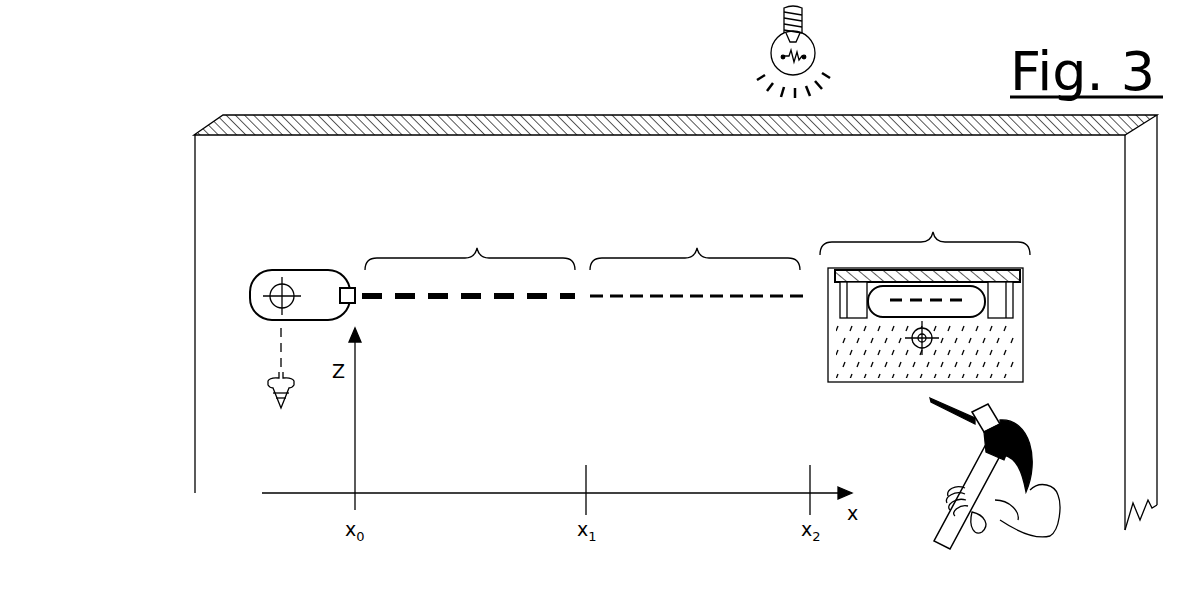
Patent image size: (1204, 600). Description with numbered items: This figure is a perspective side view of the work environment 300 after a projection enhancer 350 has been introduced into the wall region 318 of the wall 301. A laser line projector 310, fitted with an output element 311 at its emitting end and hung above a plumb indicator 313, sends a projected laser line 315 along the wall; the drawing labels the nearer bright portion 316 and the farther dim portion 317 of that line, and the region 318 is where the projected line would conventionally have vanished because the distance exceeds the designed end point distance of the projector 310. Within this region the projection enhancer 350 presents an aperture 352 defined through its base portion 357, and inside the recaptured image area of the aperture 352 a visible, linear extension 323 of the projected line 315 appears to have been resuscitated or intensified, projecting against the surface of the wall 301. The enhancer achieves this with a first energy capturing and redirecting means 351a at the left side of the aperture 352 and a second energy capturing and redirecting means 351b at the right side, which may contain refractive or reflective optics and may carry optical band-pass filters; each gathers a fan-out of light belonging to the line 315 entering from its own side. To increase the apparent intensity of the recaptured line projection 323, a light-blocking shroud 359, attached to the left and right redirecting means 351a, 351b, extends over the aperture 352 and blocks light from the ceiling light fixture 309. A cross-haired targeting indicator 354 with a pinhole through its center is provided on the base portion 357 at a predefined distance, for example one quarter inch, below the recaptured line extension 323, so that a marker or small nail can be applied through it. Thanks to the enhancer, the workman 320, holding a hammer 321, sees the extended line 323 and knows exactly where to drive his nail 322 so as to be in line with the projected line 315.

The work environment 300 is at (318, 82).
The wall 301 is at (487, 122).
The ceiling light fixture 309 is at (762, 70).
The projector 310 is at (305, 270).
The emitter aperture 311 is at (355, 280).
The plumb bob 313 is at (282, 413).
The projected laser line 315 is at (572, 305).
The bright portion of beam 316 is at (468, 245).
The dim portion of beam 317 is at (699, 245).
The wall region 318 is at (925, 217).
The workman 320 is at (1040, 535).
The hammer 321 is at (1030, 440).
The nail 322 is at (946, 417).
The recaptured line projection 323 is at (893, 302).
The projection enhancer 350 is at (826, 382).
The first energy capturing and redirecting means 351a is at (840, 305).
The second energy capturing and redirecting means 351b is at (1022, 316).
The aperture 352 is at (897, 306).
The cross-haired targeting indicator 354 is at (915, 348).
The base portion 357 is at (1014, 363).
The light-blocking shroud 359 is at (1020, 278).